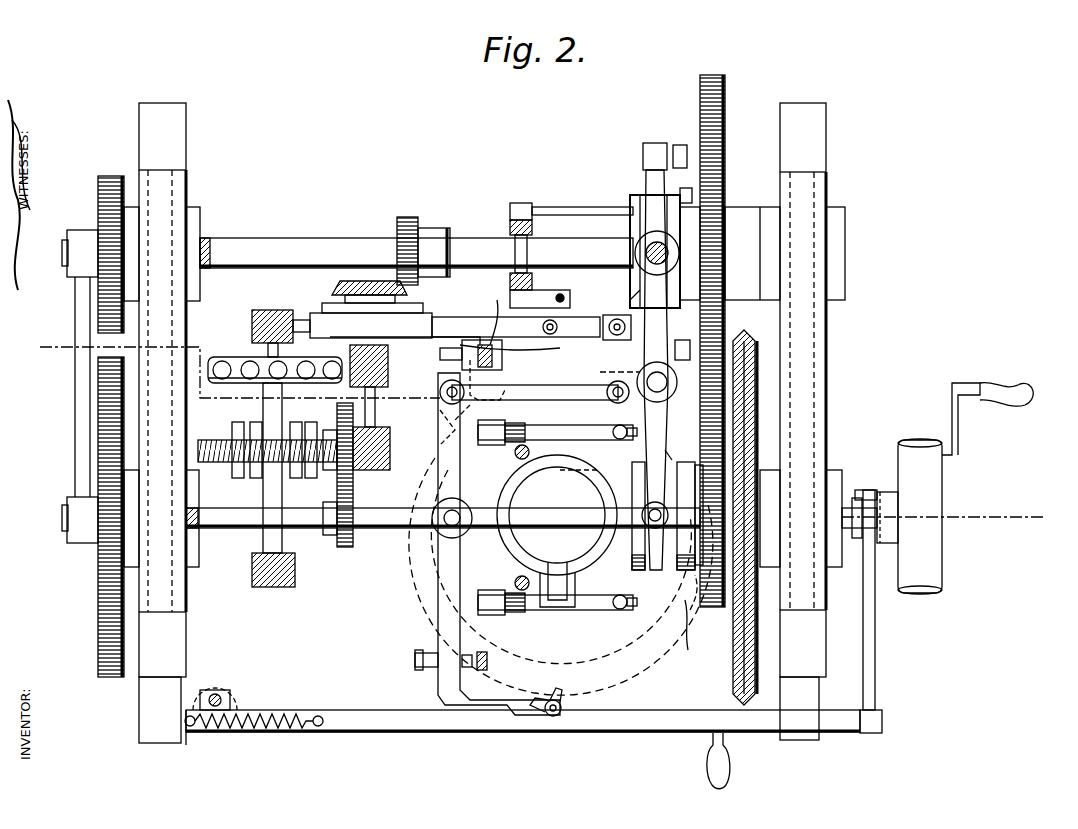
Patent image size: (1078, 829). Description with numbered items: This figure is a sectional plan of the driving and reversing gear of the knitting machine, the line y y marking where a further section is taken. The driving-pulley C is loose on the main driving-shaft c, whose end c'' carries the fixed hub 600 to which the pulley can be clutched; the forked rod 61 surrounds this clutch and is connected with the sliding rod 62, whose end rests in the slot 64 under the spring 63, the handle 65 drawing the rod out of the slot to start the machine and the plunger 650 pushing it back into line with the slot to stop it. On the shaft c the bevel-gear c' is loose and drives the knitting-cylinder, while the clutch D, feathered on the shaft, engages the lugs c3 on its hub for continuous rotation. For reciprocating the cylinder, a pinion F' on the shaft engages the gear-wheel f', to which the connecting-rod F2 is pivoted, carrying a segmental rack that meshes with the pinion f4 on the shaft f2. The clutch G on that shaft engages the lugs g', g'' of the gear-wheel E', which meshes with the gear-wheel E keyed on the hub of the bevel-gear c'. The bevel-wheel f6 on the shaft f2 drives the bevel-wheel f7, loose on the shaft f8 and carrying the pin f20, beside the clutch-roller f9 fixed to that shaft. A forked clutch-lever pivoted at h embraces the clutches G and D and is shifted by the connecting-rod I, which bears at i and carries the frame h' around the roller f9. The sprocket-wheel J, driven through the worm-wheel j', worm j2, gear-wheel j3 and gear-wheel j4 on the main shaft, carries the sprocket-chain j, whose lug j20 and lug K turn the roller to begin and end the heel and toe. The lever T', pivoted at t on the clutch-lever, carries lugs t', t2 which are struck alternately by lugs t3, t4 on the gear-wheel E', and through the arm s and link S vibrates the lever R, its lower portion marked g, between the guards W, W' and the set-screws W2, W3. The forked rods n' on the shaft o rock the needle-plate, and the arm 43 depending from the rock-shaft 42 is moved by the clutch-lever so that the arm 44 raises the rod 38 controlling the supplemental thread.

The pinion f4 is at (104, 206).
The gear-wheel f' is at (91, 517).
The connecting-rod F2 is at (80, 420).
The bracket bar F' is at (77, 426).
The section line y y is at (539, 433).
The shaft f2 is at (358, 260).
The bevel-wheel f6 is at (406, 222).
The bevel-wheel f7 is at (336, 289).
The pin f20 is at (371, 320).
The clutch-roller f9 is at (455, 305).
The lug j20 is at (282, 334).
The sprocket-wheel J is at (228, 366).
The sprocket-chain j is at (240, 468).
The worm-wheel j' is at (267, 462).
The worm j2 is at (295, 480).
The gear-wheel j3 is at (360, 478).
The gear-wheel j4 is at (348, 548).
The set-screw W3 is at (436, 384).
The shaft f8 is at (448, 426).
The main driving-shaft c is at (443, 531).
The lever R is at (440, 452).
The link S is at (540, 392).
The arm s is at (613, 366).
The link T' is at (526, 349).
The guard W' is at (485, 362).
The bearing i is at (405, 322).
The connecting-rod I is at (555, 320).
The lever g'' is at (487, 338).
The shaft o is at (557, 426).
The forked rods n' is at (557, 525).
The link K is at (630, 440).
The clutch D is at (668, 575).
The lugs c3 is at (681, 541).
The pivot t is at (630, 370).
The lug t' is at (665, 145).
The clutch G is at (632, 198).
The pivot h is at (664, 445).
The frame h' is at (626, 302).
The lugs g' is at (685, 266).
The arm 43 is at (518, 203).
The rock-shaft 42 is at (527, 252).
The arm 44 is at (534, 280).
The rod 38 is at (549, 303).
The gear-wheel E' is at (726, 341).
The gear-wheel E is at (733, 554).
The lug t2 is at (718, 334).
The lug t3 is at (712, 232).
The lug t4 is at (745, 355).
The bevel-gear c' is at (768, 517).
The rod 62 is at (622, 724).
The slot 64 is at (150, 738).
The spring 63 is at (282, 716).
The plunger 650 is at (220, 698).
The handle 65 is at (728, 772).
The pawl g is at (520, 727).
The set-screw W2 is at (420, 668).
The guard W is at (486, 665).
The forked rod 61 is at (877, 638).
The driving-pulley C is at (918, 440).
The hub 600 is at (930, 548).
The shaft stub c'' is at (859, 494).